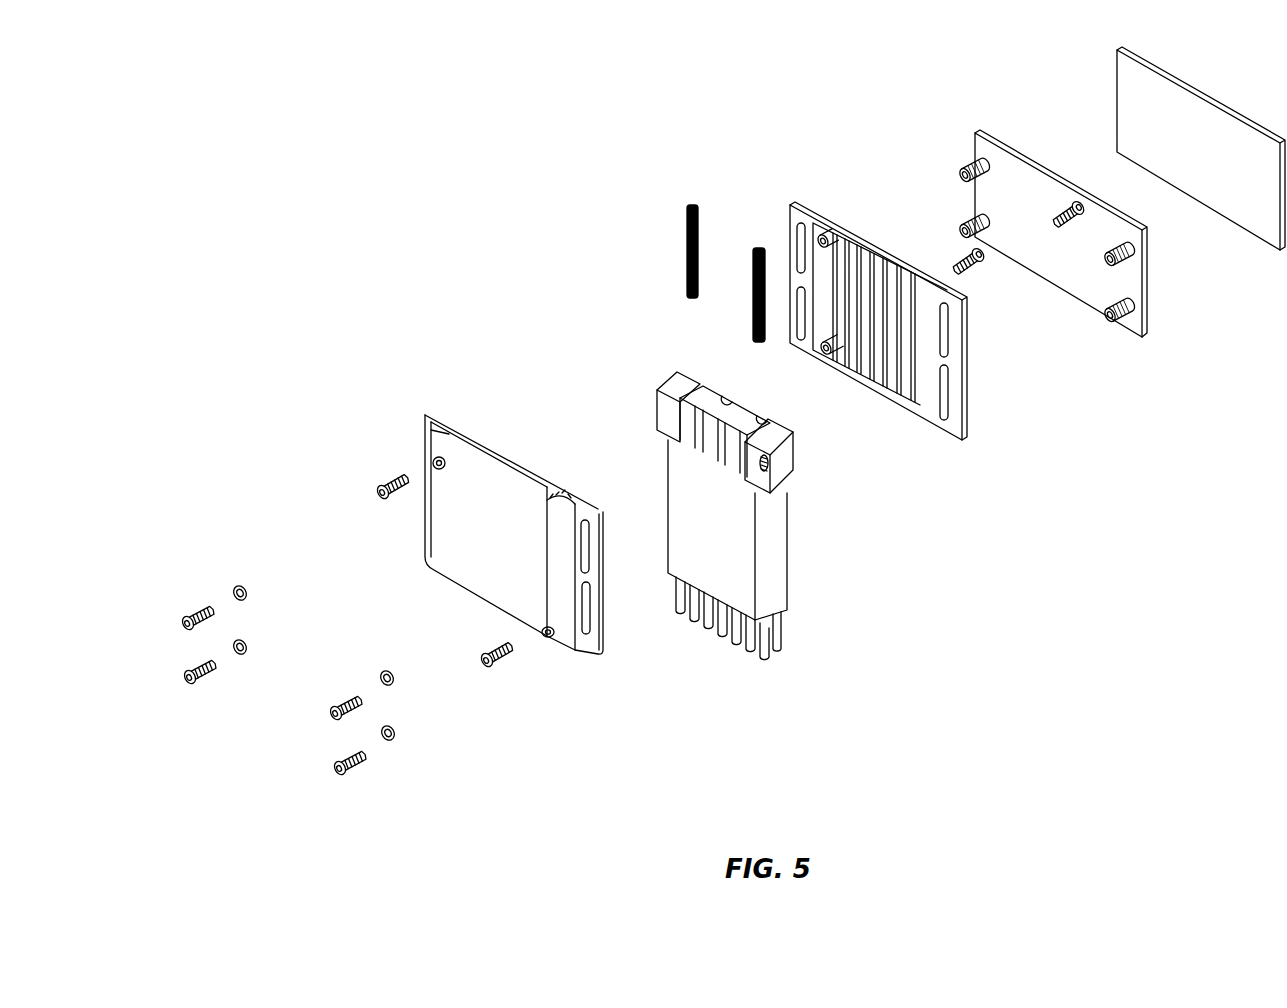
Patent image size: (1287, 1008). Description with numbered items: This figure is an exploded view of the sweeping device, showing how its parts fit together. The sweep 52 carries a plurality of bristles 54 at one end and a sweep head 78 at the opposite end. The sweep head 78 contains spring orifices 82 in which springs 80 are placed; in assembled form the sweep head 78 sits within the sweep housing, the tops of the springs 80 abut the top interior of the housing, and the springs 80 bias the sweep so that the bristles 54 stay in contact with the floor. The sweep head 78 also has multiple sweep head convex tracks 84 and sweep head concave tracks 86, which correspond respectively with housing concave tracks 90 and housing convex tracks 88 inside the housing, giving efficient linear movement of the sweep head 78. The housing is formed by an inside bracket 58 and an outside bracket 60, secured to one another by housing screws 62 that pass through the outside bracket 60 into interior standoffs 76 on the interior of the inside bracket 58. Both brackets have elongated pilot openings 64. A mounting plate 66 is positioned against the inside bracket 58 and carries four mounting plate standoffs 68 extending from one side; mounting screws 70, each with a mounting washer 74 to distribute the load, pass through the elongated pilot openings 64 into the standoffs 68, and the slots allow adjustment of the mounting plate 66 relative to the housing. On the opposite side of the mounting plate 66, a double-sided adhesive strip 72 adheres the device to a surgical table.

The sweep 52 is at (720, 572).
The bristles 54 is at (673, 622).
The inside bracket 58 is at (925, 425).
The outside bracket 60 is at (495, 465).
The housing screws 62 is at (1062, 208).
The elongated pilot openings 64 is at (797, 237).
The mounting plate 66 is at (1020, 172).
The mounting plate standoffs 68 is at (960, 170).
The mounting screws 70 is at (182, 630).
The double-sided adhesive strip 72 is at (1200, 107).
The mounting washers 74 is at (248, 643).
The interior standoffs 76 is at (821, 215).
The sweep head 78 is at (793, 470).
The springs 80 is at (685, 245).
The spring orifices 82 is at (668, 385).
The sweep head convex tracks 84 is at (680, 445).
The sweep head concave tracks 86 is at (758, 414).
The housing convex tracks 88 is at (865, 235).
The housing concave tracks 90 is at (885, 270).